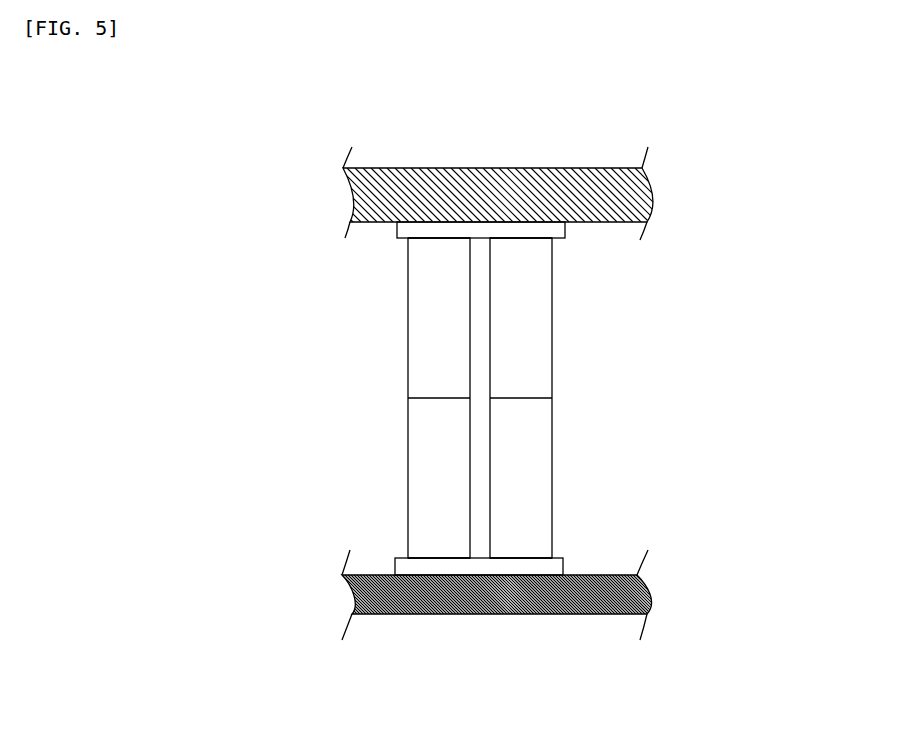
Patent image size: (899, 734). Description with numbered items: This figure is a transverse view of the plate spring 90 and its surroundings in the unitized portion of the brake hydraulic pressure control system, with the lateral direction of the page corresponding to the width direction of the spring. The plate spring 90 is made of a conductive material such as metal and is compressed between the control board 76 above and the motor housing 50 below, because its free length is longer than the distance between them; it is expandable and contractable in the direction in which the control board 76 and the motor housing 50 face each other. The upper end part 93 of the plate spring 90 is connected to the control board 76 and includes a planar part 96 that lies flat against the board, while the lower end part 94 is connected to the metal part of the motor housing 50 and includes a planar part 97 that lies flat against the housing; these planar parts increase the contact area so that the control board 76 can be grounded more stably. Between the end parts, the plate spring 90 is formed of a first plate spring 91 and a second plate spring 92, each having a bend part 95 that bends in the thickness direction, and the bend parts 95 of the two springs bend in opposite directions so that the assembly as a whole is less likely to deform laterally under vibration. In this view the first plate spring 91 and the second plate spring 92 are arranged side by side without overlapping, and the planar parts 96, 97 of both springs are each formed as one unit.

The motor housing 50 is at (515, 598).
The control board 76 is at (511, 186).
The plate spring 90 is at (479, 398).
The first plate spring 91 is at (396, 349).
The second plate spring 92 is at (564, 368).
The end part 93 is at (424, 247).
The end part 94 is at (435, 553).
The bend part 95 is at (410, 393).
The planar part 96 is at (422, 237).
The planar part 97 is at (443, 567).